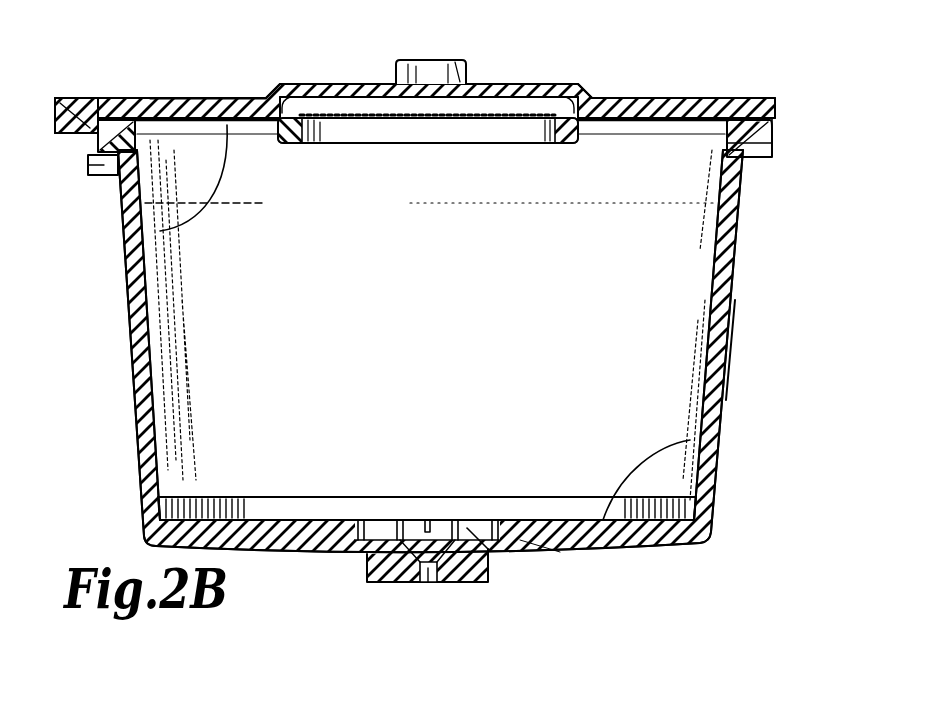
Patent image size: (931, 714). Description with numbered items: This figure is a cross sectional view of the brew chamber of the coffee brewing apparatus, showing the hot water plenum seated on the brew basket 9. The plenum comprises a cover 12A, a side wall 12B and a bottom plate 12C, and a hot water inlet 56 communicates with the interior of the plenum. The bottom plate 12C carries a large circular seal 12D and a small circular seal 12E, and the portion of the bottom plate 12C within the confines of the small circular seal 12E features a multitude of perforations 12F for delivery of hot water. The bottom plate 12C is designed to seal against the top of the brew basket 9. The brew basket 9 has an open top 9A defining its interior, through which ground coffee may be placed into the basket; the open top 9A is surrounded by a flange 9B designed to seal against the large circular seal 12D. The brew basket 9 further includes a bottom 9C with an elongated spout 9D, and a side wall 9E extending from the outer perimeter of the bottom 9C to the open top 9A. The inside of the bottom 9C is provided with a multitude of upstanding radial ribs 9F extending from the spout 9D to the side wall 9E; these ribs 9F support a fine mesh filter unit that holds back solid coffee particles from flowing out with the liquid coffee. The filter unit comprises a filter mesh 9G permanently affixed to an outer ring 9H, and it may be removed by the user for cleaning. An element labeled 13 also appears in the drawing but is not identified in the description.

The brew basket 9 is at (438, 318).
The open top 9A is at (160, 231).
The flange 9B is at (760, 143).
The bottom 9C is at (557, 551).
The elongated spout 9D is at (427, 582).
The side wall 9E is at (720, 335).
The upstanding radial ribs 9F is at (467, 528).
The filter mesh 9G is at (690, 440).
The outer ring 9H is at (713, 512).
The cover 12A is at (523, 90).
The side wall 12B is at (574, 100).
The bottom plate 12C is at (205, 119).
The large circular seal 12D is at (103, 118).
The small circular seal 12E is at (278, 114).
The perforations 12F is at (422, 106).
The latch tab 13 is at (88, 162).
The hot water inlet 56 is at (438, 72).